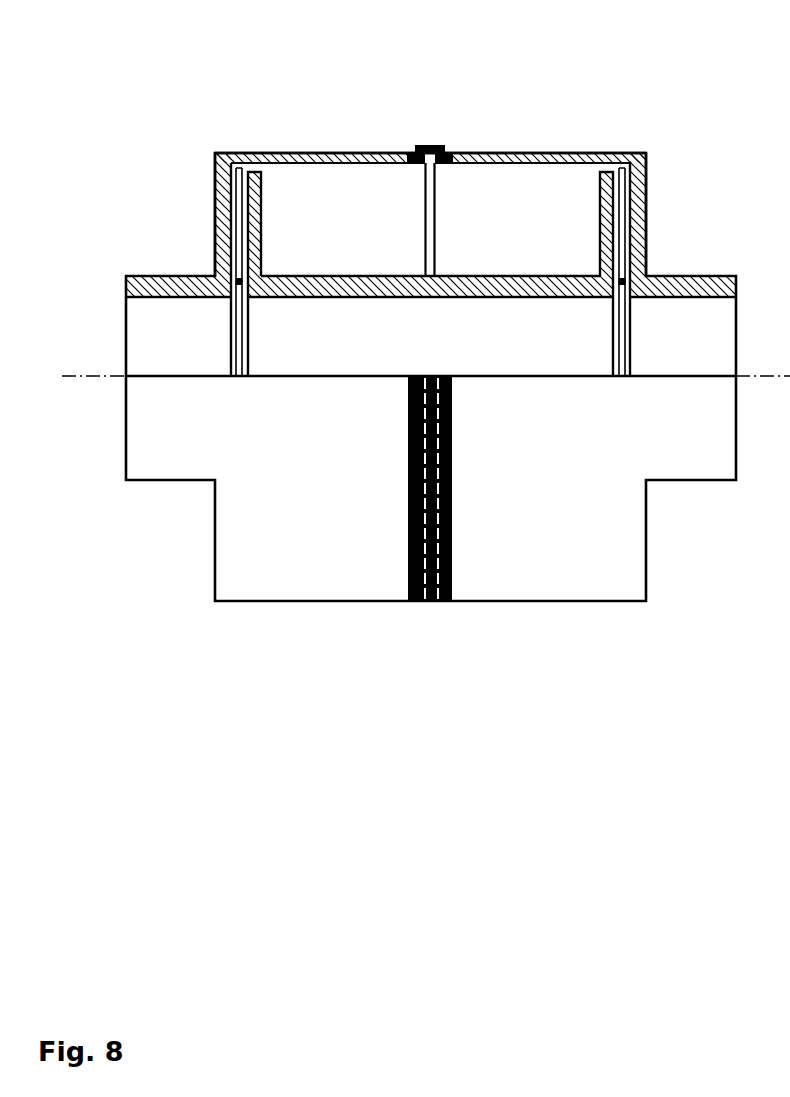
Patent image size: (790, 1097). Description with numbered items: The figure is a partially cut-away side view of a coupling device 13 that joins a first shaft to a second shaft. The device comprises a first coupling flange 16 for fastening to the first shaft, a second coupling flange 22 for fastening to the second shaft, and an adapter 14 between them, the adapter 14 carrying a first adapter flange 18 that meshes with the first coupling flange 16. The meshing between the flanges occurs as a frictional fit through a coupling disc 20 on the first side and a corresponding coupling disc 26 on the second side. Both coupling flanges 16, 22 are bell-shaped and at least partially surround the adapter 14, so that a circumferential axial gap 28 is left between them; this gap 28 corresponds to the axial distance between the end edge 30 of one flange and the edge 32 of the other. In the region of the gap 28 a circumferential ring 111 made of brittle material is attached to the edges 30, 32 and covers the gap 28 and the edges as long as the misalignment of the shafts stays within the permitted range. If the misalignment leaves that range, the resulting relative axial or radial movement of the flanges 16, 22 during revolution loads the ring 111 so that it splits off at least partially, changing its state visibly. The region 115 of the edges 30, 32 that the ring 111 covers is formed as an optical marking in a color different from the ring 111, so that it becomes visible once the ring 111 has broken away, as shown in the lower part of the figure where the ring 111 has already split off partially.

The coupling device 13 is at (165, 111).
The adapter 14 is at (296, 179).
The first coupling flange 16 is at (220, 210).
The first adapter flange 18 is at (250, 182).
The coupling disc 20 is at (238, 248).
The second coupling flange 22 is at (608, 177).
The coupling disc 26 is at (623, 177).
The circumferential axial gap 28 is at (433, 241).
The end edge 30 is at (403, 179).
The edge 32 is at (464, 134).
The circumferential ring 111 is at (433, 148).
The region 115 is at (412, 155).